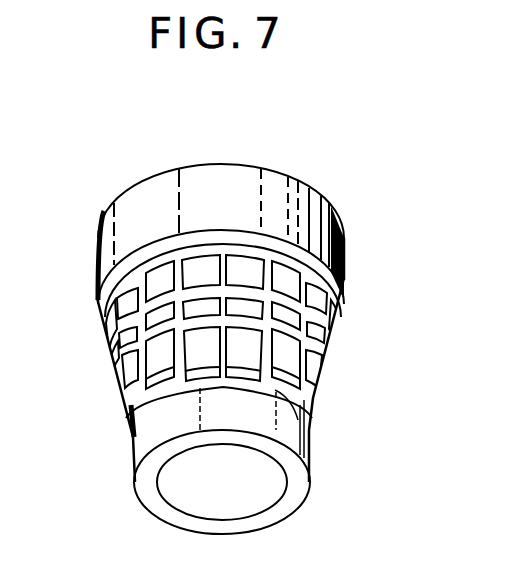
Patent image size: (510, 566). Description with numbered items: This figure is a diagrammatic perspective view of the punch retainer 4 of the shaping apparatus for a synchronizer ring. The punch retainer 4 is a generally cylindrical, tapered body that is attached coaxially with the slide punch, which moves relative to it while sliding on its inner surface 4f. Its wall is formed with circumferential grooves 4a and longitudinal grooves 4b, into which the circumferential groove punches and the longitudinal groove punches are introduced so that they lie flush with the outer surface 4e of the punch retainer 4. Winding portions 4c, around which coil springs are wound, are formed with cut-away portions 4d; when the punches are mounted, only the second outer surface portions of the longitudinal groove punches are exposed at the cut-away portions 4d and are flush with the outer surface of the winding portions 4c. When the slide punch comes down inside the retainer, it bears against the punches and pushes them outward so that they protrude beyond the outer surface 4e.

The punch retainer 4 is at (340, 222).
The circumferential grooves 4a is at (334, 326).
The longitudinal grooves 4b is at (322, 386).
The winding portions 4c is at (281, 257).
The cut-away portions 4d is at (225, 249).
The outer surface 4e is at (148, 377).
The inner surface 4f is at (175, 495).